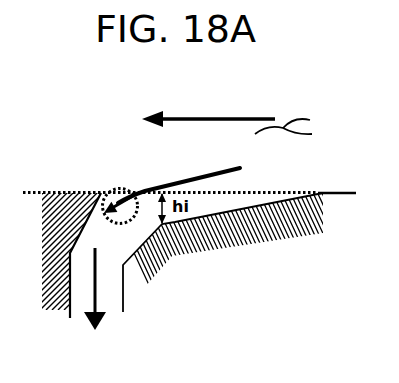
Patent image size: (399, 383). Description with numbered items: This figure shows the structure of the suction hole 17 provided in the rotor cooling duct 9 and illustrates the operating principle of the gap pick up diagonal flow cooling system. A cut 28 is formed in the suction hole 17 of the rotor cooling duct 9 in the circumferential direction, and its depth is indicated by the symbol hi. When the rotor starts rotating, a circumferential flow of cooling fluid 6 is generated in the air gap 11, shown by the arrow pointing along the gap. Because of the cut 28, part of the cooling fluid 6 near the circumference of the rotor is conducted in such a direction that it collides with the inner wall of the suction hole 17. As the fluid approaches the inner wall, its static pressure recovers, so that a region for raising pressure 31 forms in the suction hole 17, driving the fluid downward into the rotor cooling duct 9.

The cooling fluid 6 is at (196, 118).
The rotor cooling duct 9 is at (110, 281).
The air gap 11 is at (310, 120).
The suction hole 17 is at (228, 192).
The cut 28 is at (247, 238).
The region for raising pressure 31 is at (100, 191).